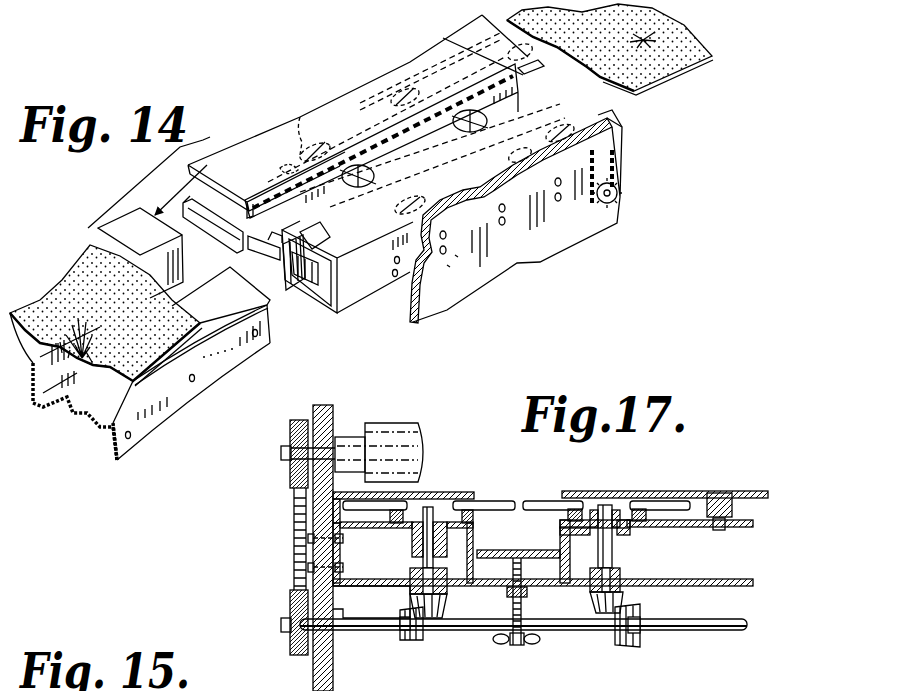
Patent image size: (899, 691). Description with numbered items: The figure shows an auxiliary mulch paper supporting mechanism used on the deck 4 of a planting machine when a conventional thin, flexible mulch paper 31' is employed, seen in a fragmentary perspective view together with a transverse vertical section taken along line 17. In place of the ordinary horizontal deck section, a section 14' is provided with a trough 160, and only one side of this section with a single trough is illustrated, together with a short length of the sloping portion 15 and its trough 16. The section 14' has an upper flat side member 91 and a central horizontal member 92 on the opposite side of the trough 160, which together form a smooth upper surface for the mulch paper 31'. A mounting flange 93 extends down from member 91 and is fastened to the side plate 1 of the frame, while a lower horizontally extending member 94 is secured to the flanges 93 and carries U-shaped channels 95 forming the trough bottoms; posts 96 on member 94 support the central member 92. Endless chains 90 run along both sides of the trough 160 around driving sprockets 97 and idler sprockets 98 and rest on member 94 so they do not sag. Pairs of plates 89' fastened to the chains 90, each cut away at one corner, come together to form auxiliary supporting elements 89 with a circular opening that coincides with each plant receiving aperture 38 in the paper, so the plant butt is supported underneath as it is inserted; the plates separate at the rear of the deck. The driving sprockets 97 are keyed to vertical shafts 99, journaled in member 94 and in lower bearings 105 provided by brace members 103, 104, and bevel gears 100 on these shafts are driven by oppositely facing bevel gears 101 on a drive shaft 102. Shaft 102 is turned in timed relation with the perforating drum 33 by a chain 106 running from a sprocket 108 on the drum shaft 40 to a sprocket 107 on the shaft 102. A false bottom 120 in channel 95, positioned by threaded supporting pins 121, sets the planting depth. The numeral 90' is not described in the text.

In FIG. 14, the side plate 1 is at (463, 287).
In FIG. 17, the side plate 1 is at (316, 678).
In FIG. 14, the deck 4 is at (229, 161).
In FIG. 14, the horizontal deck section 14' is at (358, 83).
In FIG. 17, the horizontal deck section 14' is at (729, 463).
In FIG. 14, the sloping portion 15 is at (146, 253).
In FIG. 14, the trough 16 is at (42, 420).
In FIG. 14, the section line 17 is at (417, 39).
In FIG. 14, the mulch paper 31' is at (376, 195).
In FIG. 17, the perforating drum 33 is at (398, 432).
In FIG. 14, the plant receiving aperture 38 is at (646, 39).
In FIG. 17, the shaft 40 is at (323, 450).
In FIG. 14, the auxiliary supporting element 89 is at (405, 173).
In FIG. 17, the auxiliary supporting element 89 is at (463, 483).
In FIG. 14, the plate 89' is at (540, 65).
In FIG. 17, the plate 89' is at (678, 532).
In FIG. 14, the endless chain 90 is at (273, 164).
In FIG. 17, the endless chain 90 is at (518, 493).
In FIG. 14, the guide slot 90' is at (473, 215).
In FIG. 14, the upper flat side member 91 is at (606, 116).
In FIG. 17, the upper flat side member 91 is at (445, 491).
In FIG. 14, the central horizontal member 92 is at (462, 63).
In FIG. 17, the central horizontal member 92 is at (660, 497).
In FIG. 14, the mounting flange 93 is at (367, 296).
In FIG. 17, the mounting flange 93 is at (336, 521).
In FIG. 14, the lower horizontally extending member 94 is at (325, 270).
In FIG. 17, the lower horizontally extending member 94 is at (388, 532).
In FIG. 14, the U-shaped channel 95 is at (242, 250).
In FIG. 17, the U-shaped channel 95 is at (565, 584).
In FIG. 17, the post 96 is at (728, 494).
In FIG. 14, the driving sprocket 97 is at (524, 63).
In FIG. 17, the driving sprocket 97 is at (410, 537).
In FIG. 14, the idler sprocket 98 is at (252, 184).
In FIG. 17, the vertical shaft 99 is at (442, 545).
In FIG. 17, the bevel gear 100 is at (444, 611).
In FIG. 17, the bevel gear 101 is at (408, 641).
In FIG. 14, the drive shaft 102 is at (617, 194).
In FIG. 17, the drive shaft 102 is at (364, 632).
In FIG. 14, the brace member 103 is at (337, 315).
In FIG. 17, the brace member 103 is at (395, 595).
In FIG. 14, the brace member 104 is at (210, 222).
In FIG. 17, the brace member 104 is at (712, 587).
In FIG. 17, the lower bearing 105 is at (414, 573).
In FIG. 14, the chain 106 is at (598, 180).
In FIG. 17, the chain 106 is at (292, 572).
In FIG. 14, the sprocket 107 is at (600, 214).
In FIG. 17, the sprocket 107 is at (290, 648).
In FIG. 17, the sprocket 108 is at (290, 438).
In FIG. 14, the false bottom 120 is at (221, 295).
In FIG. 17, the false bottom 120 is at (549, 551).
In FIG. 17, the supporting pin 121 is at (508, 613).
In FIG. 14, the trough 160 is at (530, 100).
In FIG. 17, the trough 160 is at (526, 503).